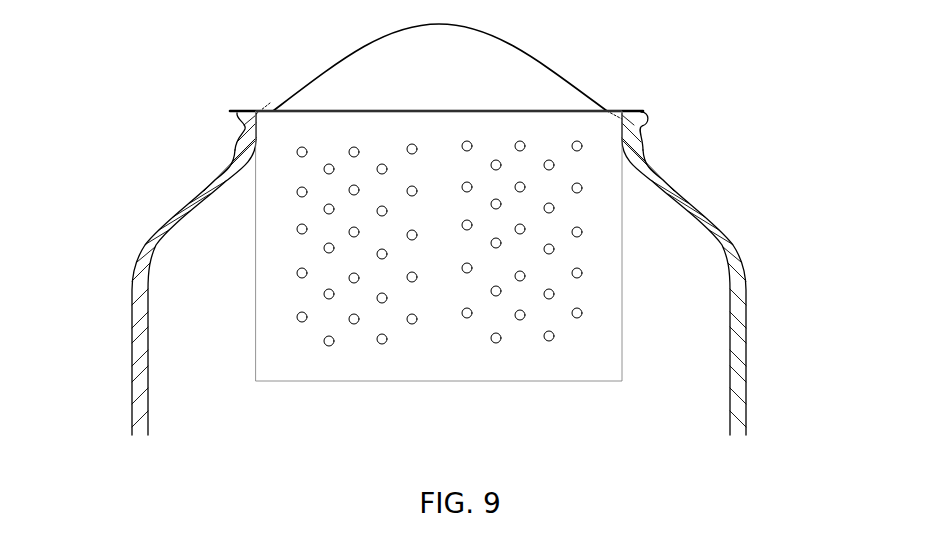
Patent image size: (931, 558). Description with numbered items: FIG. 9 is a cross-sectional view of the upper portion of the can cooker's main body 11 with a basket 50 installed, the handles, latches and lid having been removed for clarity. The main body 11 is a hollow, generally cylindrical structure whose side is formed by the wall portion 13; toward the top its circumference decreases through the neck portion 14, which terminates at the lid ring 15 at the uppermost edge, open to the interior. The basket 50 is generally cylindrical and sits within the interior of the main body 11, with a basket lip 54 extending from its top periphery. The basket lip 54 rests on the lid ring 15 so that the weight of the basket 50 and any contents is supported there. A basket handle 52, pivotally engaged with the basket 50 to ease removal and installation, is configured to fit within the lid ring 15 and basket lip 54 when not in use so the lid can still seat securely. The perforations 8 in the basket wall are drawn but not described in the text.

The perforation hole 8 is at (325, 345).
The main body 11 is at (437, 302).
The wall portion 13 is at (131, 402).
The neck portion 14 is at (703, 215).
The lid ring 15 is at (643, 113).
The basket 50 is at (451, 326).
The basket handle 52 is at (310, 78).
The basket lip 54 is at (230, 110).